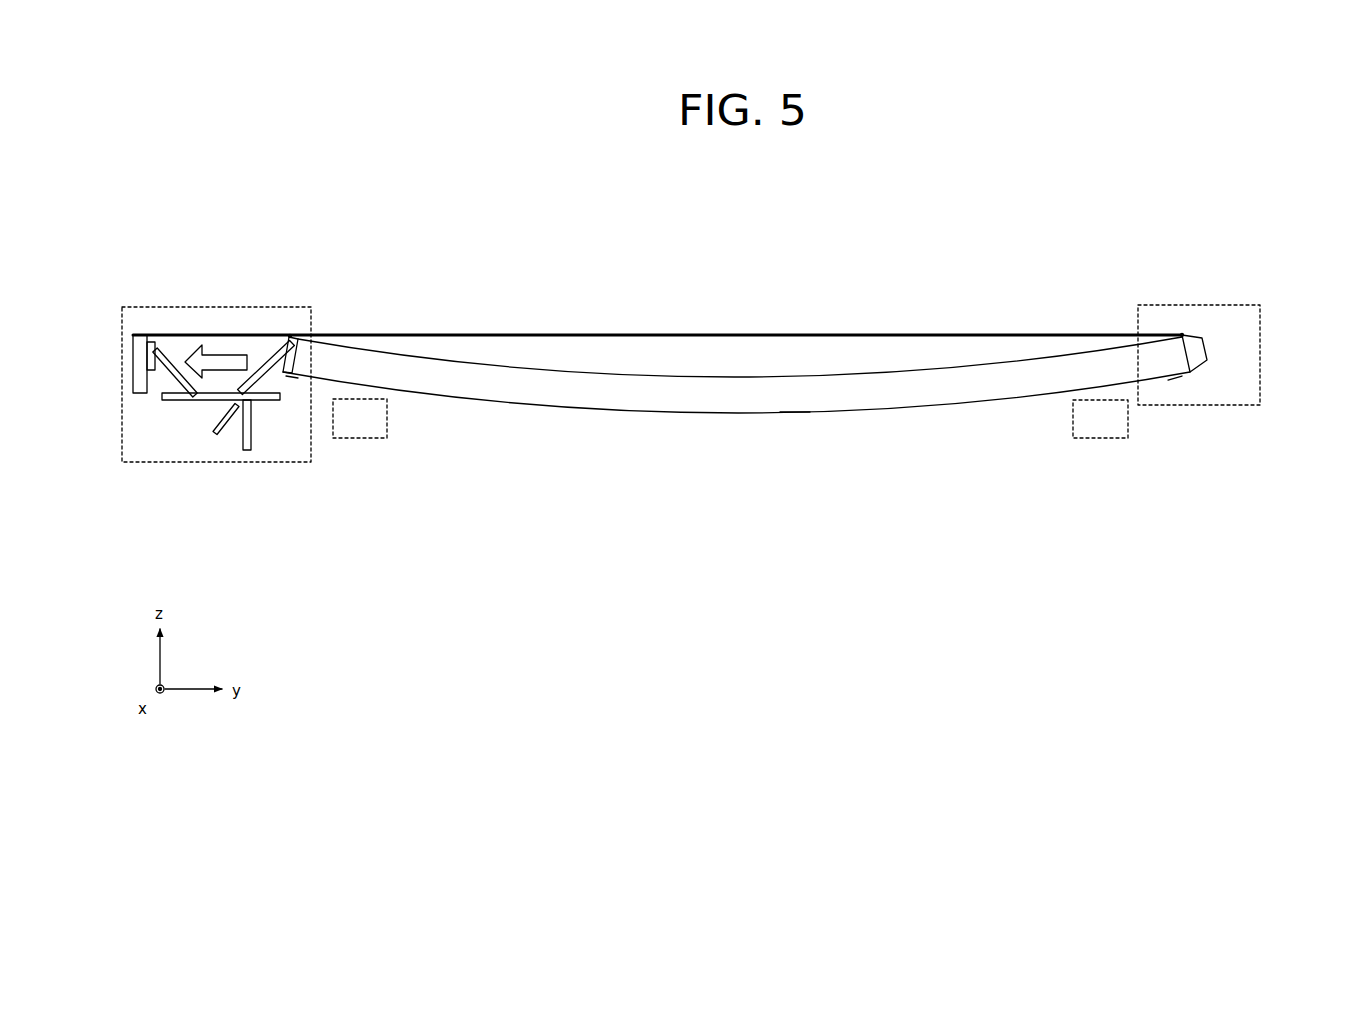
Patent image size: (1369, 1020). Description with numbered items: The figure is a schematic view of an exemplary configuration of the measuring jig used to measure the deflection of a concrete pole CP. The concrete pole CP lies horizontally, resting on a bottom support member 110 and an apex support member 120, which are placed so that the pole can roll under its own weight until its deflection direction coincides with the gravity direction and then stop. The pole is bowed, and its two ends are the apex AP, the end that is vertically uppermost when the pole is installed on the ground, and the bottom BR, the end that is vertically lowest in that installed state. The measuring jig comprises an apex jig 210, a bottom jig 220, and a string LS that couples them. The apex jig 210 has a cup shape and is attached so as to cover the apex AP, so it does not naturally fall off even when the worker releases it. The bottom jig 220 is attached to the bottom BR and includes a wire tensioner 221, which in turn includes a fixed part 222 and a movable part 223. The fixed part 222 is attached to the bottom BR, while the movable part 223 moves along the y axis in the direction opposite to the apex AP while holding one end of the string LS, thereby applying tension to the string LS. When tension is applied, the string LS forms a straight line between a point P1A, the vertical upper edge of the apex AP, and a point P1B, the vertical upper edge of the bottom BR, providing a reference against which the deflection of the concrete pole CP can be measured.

The apex jig 210 is at (1215, 360).
The bottom jig 220 is at (180, 399).
The wire tensioner 221 is at (187, 402).
The fixed part 222 is at (260, 356).
The movable part 223 is at (142, 329).
The bottom support member 110 is at (376, 433).
The apex support member 120 is at (1093, 430).
The string LS is at (205, 331).
The point on the apex P1A is at (1183, 331).
The point on the bottom P1B is at (294, 329).
The apex of the concrete pole AP is at (1175, 385).
The bottom of the concrete pole BR is at (293, 387).
The concrete pole CP is at (793, 399).